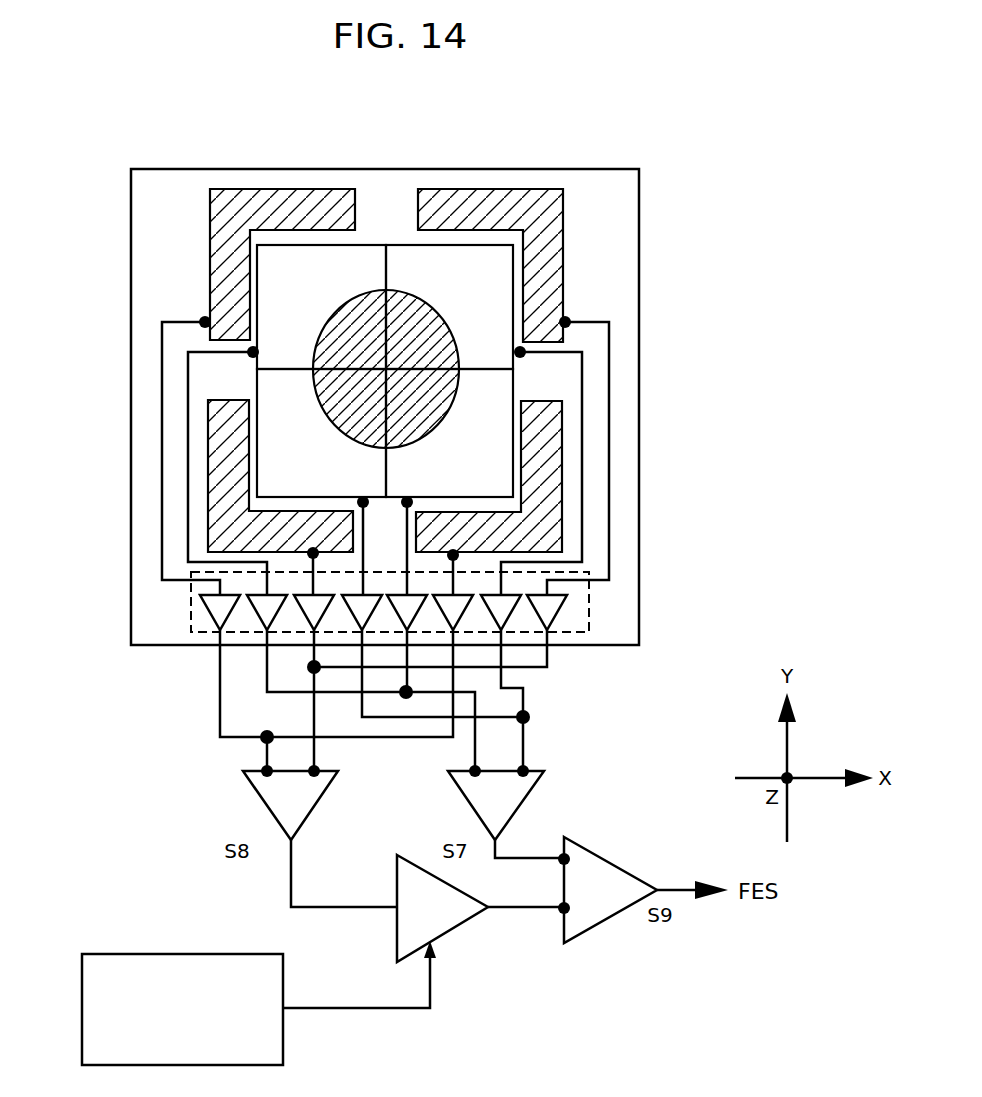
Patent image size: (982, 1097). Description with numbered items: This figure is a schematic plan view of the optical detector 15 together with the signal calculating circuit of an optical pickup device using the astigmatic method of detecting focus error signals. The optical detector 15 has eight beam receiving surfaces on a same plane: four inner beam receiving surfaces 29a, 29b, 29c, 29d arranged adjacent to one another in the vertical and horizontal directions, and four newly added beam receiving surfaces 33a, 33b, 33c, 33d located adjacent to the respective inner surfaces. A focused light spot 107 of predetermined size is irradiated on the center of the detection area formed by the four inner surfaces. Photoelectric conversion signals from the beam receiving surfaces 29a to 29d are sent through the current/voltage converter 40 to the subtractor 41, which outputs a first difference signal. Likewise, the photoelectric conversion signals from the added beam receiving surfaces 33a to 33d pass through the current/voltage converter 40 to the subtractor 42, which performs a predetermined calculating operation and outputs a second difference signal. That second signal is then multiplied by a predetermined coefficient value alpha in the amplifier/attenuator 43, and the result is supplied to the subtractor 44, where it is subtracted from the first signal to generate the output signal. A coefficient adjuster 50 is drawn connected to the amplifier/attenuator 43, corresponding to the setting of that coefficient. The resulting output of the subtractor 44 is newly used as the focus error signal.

The optical detector 15 is at (131, 287).
The beam receiving surface 29a is at (268, 387).
The beam receiving surface 29b is at (503, 389).
The beam receiving surface 29c is at (400, 255).
The beam receiving surface 29d is at (362, 255).
The beam receiving surface 33a is at (208, 511).
The beam receiving surface 33b is at (555, 492).
The beam receiving surface 33c is at (526, 196).
The beam receiving surface 33d is at (255, 196).
The focused light spot 107 is at (433, 405).
The current/voltage converter 40 is at (580, 607).
The subtractor 41 is at (522, 800).
The subtractor 42 is at (262, 803).
The amplifier/attenuator 43 is at (458, 930).
The subtractor 44 is at (600, 920).
The coefficient adjuster 50 is at (139, 954).